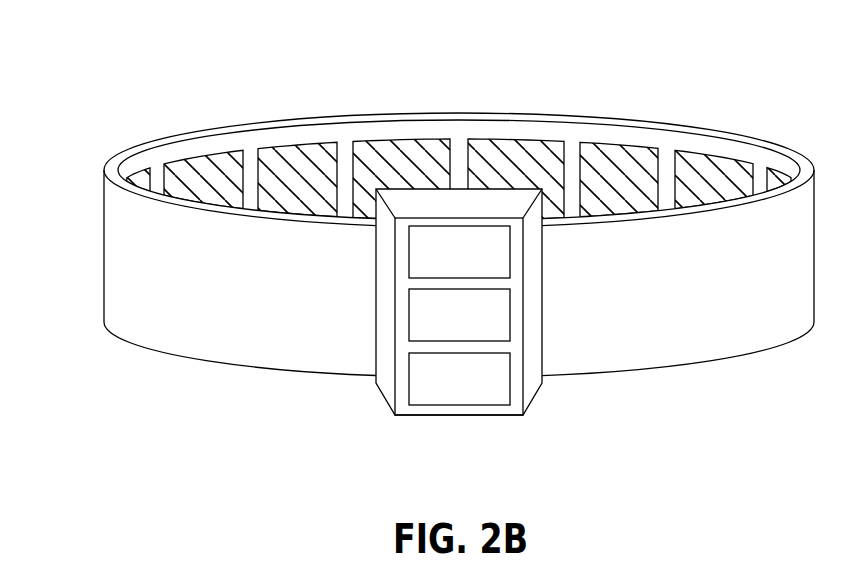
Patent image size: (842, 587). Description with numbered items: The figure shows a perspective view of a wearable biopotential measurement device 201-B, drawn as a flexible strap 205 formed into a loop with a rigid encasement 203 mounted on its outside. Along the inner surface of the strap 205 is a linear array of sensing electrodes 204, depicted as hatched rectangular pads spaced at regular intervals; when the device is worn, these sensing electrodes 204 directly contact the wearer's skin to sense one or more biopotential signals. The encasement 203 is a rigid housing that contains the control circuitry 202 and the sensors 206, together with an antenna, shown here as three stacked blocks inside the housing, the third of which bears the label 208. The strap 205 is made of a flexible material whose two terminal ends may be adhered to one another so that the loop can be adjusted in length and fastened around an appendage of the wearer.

The wearable biopotential measurement device 201-B is at (128, 53).
The control circuitry 202 is at (459, 252).
The encasement 203 is at (529, 327).
The sensing electrodes 204 is at (459, 179).
The strap 205 is at (239, 386).
The sensors 206 is at (459, 315).
The communication unit 208 is at (459, 379).